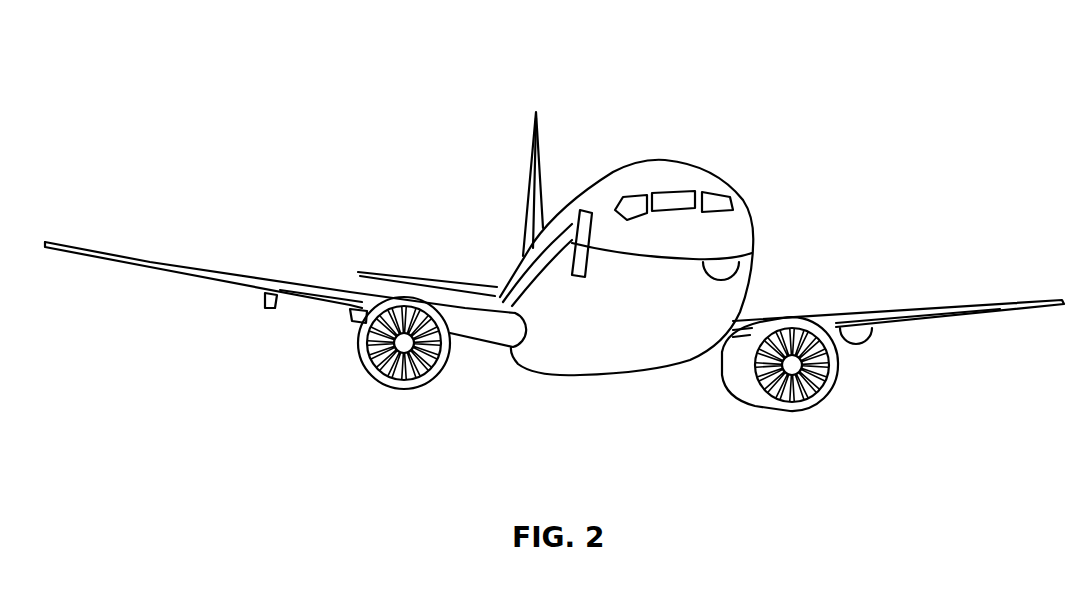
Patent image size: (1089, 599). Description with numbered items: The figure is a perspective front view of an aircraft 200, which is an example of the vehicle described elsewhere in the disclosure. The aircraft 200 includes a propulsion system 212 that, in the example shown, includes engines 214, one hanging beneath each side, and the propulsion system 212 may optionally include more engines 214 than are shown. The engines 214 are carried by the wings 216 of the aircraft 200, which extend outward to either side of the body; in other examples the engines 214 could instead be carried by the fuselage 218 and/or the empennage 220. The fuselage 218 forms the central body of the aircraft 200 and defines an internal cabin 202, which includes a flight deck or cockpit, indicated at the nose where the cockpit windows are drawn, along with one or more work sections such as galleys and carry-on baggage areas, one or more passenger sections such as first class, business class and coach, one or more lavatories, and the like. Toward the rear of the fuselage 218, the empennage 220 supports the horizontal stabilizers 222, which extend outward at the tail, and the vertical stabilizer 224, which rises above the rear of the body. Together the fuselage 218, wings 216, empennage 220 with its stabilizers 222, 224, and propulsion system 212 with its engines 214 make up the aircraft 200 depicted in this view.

The aircraft 200 is at (300, 58).
The internal cabin 202 is at (718, 203).
The propulsion system 212 is at (641, 391).
The engines 214 is at (400, 389).
The wings 216 is at (182, 268).
The fuselage 218 is at (756, 232).
The empennage 220 is at (527, 255).
The horizontal stabilizers 222 is at (397, 275).
The vertical stabilizer 224 is at (532, 152).